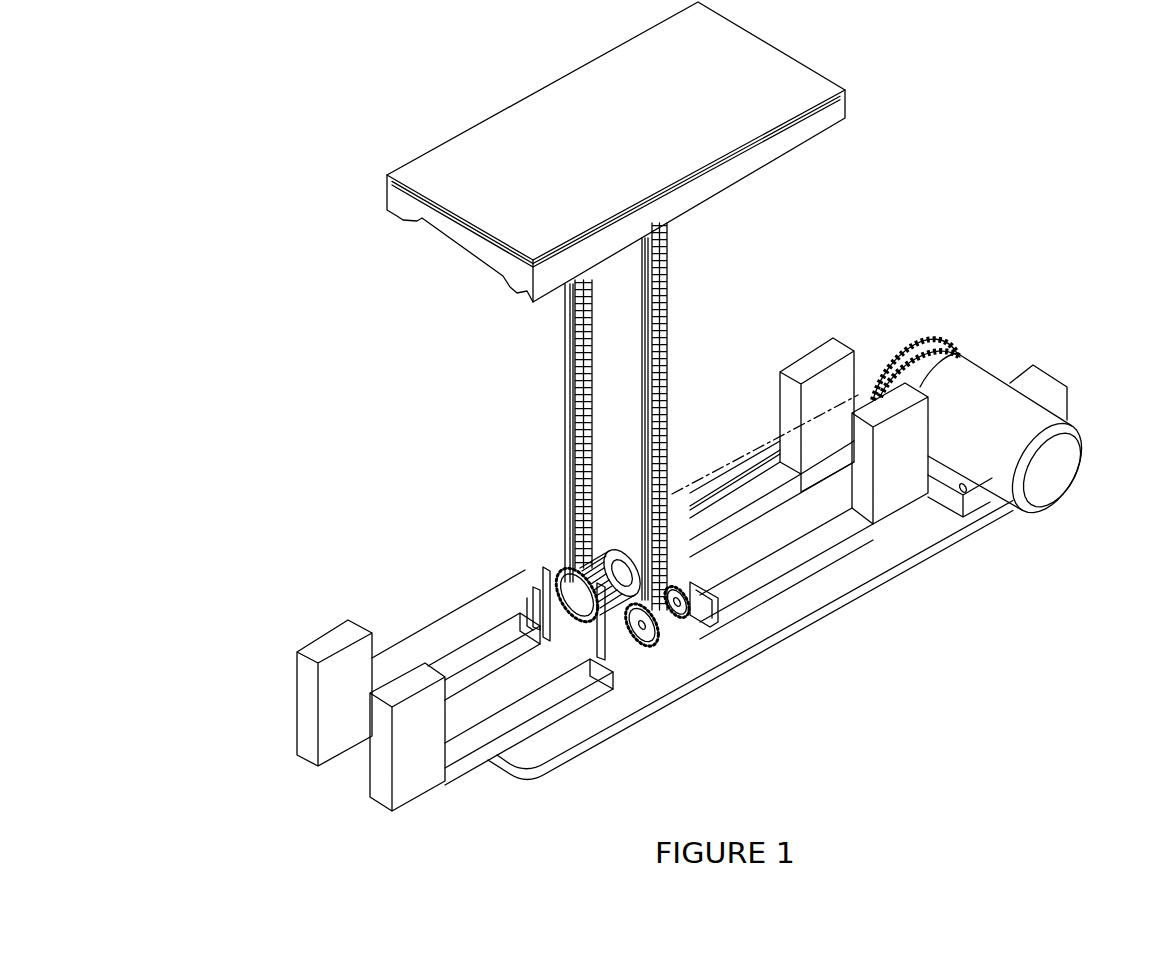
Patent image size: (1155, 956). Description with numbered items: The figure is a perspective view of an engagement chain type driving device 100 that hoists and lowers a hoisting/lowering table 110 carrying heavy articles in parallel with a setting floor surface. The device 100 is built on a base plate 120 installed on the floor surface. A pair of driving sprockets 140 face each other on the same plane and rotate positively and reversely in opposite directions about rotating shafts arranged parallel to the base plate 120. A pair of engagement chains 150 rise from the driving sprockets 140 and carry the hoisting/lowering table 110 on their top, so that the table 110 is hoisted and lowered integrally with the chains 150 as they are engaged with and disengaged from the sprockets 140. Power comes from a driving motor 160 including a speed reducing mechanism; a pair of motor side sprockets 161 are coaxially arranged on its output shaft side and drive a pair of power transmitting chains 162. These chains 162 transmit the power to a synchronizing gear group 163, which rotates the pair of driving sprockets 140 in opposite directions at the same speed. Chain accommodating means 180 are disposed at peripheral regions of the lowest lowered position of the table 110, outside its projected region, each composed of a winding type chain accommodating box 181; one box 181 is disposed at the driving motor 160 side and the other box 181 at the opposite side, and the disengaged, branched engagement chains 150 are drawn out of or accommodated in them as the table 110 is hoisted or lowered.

The engagement chain type driving device 100 is at (346, 128).
The hoisting/lowering table 110 is at (601, 150).
The base plate 120 is at (750, 633).
The driving sprockets 140 is at (675, 627).
The engagement chains 150 is at (668, 313).
The driving motor 160 is at (1057, 483).
The motor side sprockets 161 is at (932, 338).
The power transmitting chains 162 is at (858, 387).
The synchronizing gear group 163 is at (583, 615).
The chain accommodating means 180 is at (617, 574).
The winding type chain accommodating box 181 is at (327, 645).